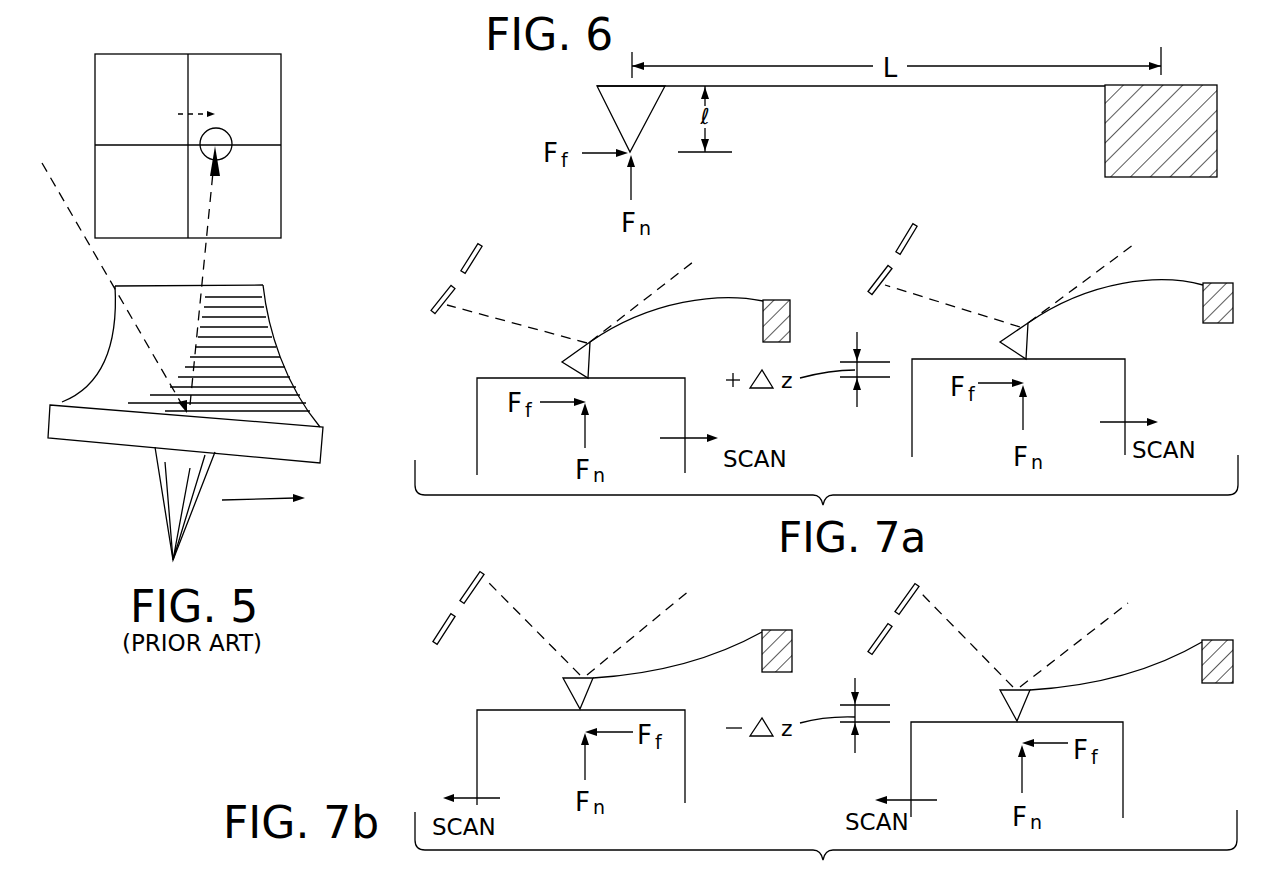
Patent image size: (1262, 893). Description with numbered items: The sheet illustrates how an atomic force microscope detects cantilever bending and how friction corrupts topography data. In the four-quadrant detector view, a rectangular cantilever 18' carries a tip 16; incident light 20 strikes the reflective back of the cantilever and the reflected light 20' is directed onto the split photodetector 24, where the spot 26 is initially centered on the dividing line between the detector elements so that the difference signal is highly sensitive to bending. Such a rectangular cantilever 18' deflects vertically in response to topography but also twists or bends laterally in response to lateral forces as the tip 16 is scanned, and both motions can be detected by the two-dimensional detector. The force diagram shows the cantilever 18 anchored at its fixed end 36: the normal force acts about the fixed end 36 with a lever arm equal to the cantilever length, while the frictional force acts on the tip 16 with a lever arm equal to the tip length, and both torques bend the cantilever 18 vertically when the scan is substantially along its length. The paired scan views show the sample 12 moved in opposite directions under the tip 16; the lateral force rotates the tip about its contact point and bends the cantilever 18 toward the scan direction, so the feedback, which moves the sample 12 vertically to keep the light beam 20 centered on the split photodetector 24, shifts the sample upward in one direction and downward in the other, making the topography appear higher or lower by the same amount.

In FIG. 7A, the sample 12 is at (472, 412).
In FIG. 7B, the sample 12 is at (475, 735).
In FIG. 5, the tip 16 is at (187, 532).
In FIG. 6, the tip 16 is at (620, 107).
In FIG. 7A, the tip 16 is at (563, 365).
In FIG. 7B, the tip 16 is at (568, 695).
In FIG. 6, the cantilever 18 is at (851, 105).
In FIG. 7A, the cantilever 18 is at (896, 318).
In FIG. 7B, the cantilever 18 is at (897, 671).
In FIG. 5, the rectangular cantilever 18' is at (202, 374).
In FIG. 5, the light beam 20 is at (114, 288).
In FIG. 7A, the light beam 20 is at (861, 293).
In FIG. 7B, the light beam 20 is at (857, 635).
In FIG. 5, the reflected light beam 20' is at (258, 275).
In FIG. 7A, the reflected light beam 20' is at (733, 308).
In FIG. 7B, the reflected light beam 20' is at (750, 634).
In FIG. 5, the split photodetector 24 is at (285, 138).
In FIG. 7A, the split photodetector 24 is at (460, 268).
In FIG. 7B, the split photodetector 24 is at (468, 587).
In FIG. 5, the spot 26 is at (198, 140).
In FIG. 6, the fixed end 36 is at (1093, 85).
In FIG. 7A, the fixed end 36 is at (765, 300).
In FIG. 7B, the fixed end 36 is at (762, 630).